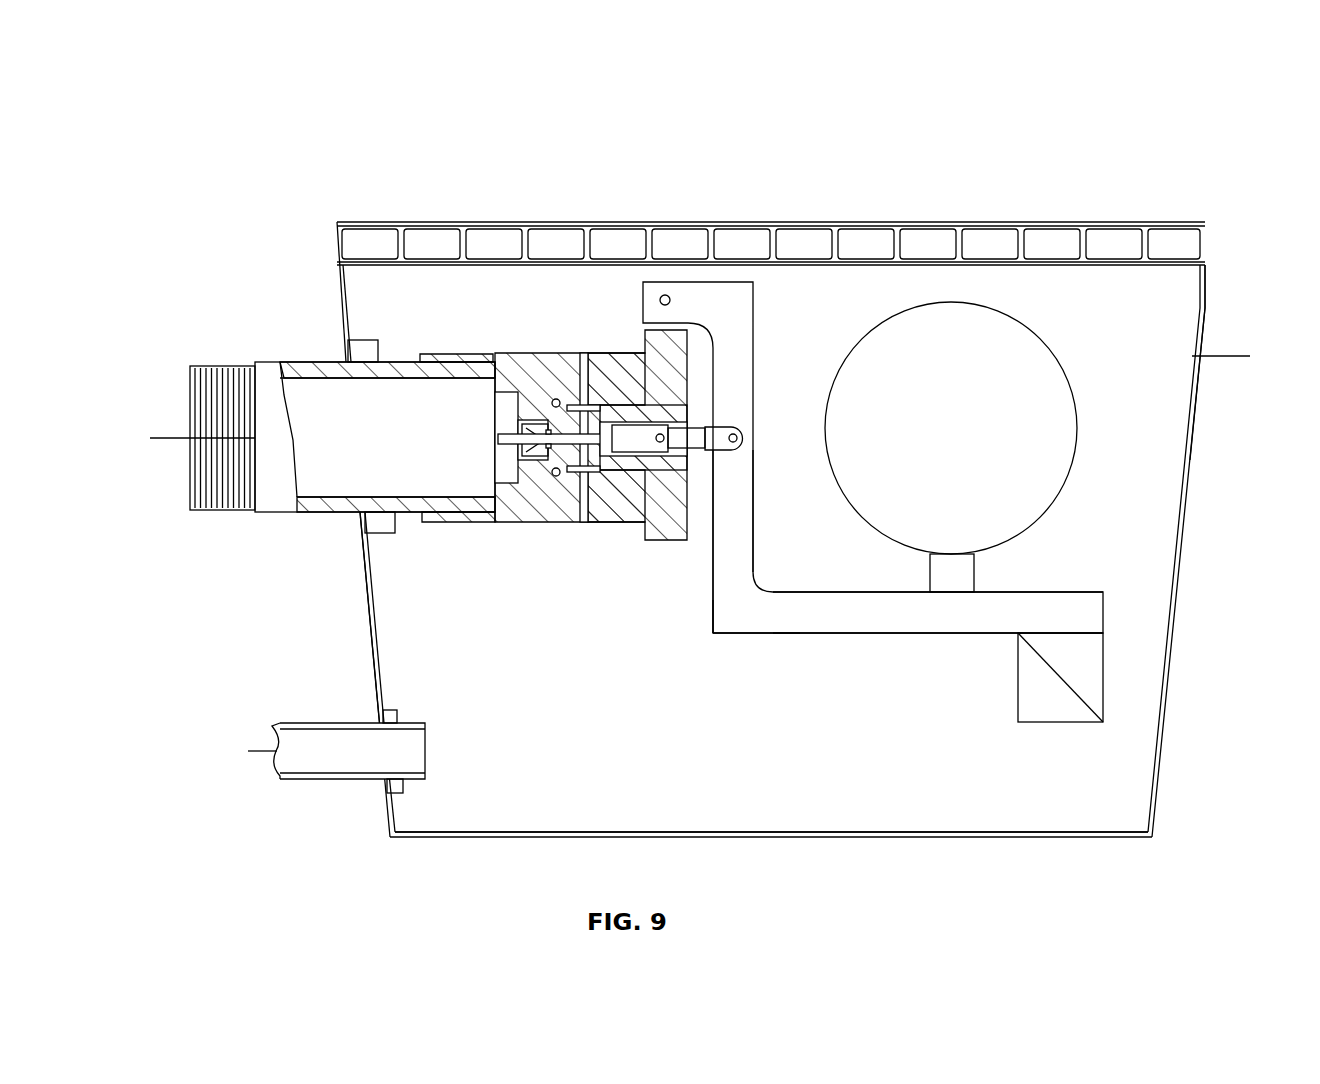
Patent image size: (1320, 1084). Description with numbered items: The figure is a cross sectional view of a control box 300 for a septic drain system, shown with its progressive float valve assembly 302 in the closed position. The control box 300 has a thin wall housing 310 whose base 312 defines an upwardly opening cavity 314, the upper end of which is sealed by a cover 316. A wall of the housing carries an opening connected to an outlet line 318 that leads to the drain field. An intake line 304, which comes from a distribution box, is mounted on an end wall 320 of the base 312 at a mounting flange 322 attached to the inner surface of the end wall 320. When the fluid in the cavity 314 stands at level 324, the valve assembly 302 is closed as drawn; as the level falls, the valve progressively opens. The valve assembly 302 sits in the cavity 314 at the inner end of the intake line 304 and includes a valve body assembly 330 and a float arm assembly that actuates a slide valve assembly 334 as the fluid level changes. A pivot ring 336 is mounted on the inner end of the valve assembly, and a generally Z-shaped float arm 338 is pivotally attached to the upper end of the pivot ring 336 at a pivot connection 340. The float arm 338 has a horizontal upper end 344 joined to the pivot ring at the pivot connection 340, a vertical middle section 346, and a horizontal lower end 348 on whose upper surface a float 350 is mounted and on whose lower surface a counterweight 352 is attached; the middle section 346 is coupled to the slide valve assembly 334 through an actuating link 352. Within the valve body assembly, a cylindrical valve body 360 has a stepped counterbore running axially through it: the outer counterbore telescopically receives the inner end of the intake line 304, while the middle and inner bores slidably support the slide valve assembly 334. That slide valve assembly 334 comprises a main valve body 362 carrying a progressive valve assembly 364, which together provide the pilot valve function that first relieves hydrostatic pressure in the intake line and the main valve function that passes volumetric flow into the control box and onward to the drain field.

The control box 300 is at (333, 138).
The progressive float valve assembly 302 is at (593, 402).
The intake line 304 is at (255, 362).
The housing 310 is at (362, 563).
The base 312 is at (1160, 748).
The cavity 314 is at (771, 791).
The cover 316 is at (337, 240).
The outlet line 318 is at (318, 777).
The end wall 320 is at (372, 607).
The mounting flange 322 is at (385, 534).
The fluid level 324 is at (1225, 356).
The valve body assembly 330 is at (487, 524).
The slide valve assembly 334 is at (645, 474).
The pivot ring 336 is at (653, 345).
The float arm 338 is at (712, 638).
The pivot connection 340 is at (661, 296).
The horizontal upper end 344 is at (720, 290).
The vertical middle section 346 is at (733, 500).
The horizontal lower end 348 is at (907, 618).
The float 350 is at (1033, 344).
The actuating link 352 is at (718, 428).
The cylindrical valve body 360 is at (440, 357).
The main valve body 362 is at (535, 400).
The progressive valve assembly 364 is at (648, 422).